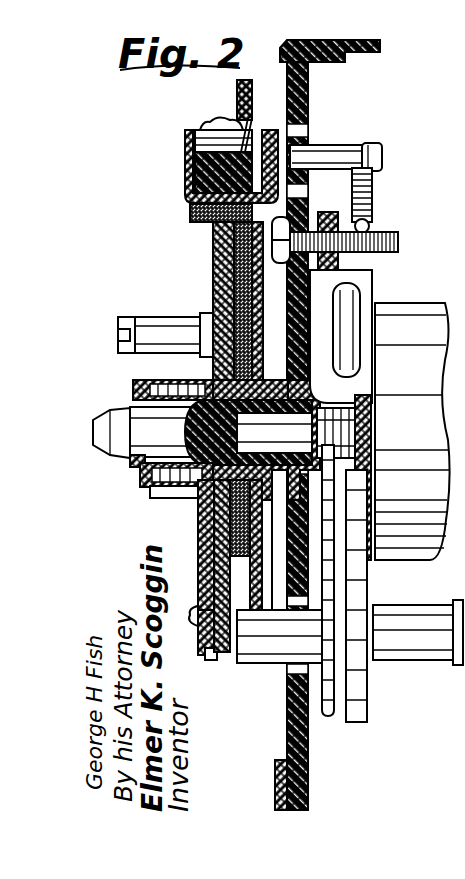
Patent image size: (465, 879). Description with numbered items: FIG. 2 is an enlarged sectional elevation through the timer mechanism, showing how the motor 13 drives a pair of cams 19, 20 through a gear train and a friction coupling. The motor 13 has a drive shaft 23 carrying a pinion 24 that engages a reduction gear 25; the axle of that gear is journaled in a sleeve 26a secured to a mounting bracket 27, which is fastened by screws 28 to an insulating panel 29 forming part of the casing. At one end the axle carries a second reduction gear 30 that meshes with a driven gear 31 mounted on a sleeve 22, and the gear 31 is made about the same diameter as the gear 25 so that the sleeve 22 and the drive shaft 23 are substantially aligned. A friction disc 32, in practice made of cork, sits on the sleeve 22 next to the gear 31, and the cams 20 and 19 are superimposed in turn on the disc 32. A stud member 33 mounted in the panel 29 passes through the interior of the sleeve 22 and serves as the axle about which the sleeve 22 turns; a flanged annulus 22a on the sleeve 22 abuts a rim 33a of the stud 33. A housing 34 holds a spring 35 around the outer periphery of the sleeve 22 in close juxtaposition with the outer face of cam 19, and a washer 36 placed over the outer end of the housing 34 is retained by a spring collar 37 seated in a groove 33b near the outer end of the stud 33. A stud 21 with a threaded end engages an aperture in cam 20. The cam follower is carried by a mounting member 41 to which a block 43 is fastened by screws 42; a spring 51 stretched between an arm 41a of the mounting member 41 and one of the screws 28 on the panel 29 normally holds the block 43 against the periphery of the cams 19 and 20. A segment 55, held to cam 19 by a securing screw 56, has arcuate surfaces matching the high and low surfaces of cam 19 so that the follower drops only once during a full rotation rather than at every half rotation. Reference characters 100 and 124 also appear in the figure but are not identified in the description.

The motor 13 is at (422, 305).
The cam 19 is at (211, 661).
The cam 20 is at (226, 653).
The stud 21 is at (178, 318).
The sleeve 22 is at (178, 496).
The flanged annulus 22a is at (215, 312).
The drive shaft 23 is at (322, 412).
The pinion 24 is at (372, 468).
The reduction gear 25 is at (331, 716).
The sleeve 26a is at (397, 620).
The mounting bracket 27 is at (368, 694).
The screws 28 is at (399, 240).
The insulating panel 29 is at (308, 128).
The second reduction gear 30 is at (272, 664).
The driven gear 31 is at (266, 570).
The friction disc 32 is at (275, 540).
The stud member 33 is at (100, 412).
The rim 33a is at (262, 305).
The groove 33b is at (142, 384).
The housing 34 is at (133, 306).
The spring 35 is at (206, 318).
The washer 36 is at (150, 486).
The spring collar 37 is at (138, 468).
The mounting member 41 is at (190, 200).
The arm 41a is at (378, 150).
The screws 42 is at (224, 118).
The block 43 is at (250, 138).
The spring 51 is at (374, 202).
The segment 55 is at (199, 560).
The securing screw 56 is at (195, 620).
The knurled knob 100 is at (420, 505).
The lever 124 is at (258, 70).